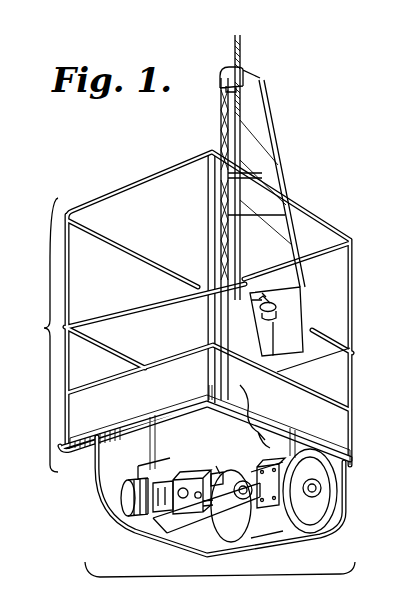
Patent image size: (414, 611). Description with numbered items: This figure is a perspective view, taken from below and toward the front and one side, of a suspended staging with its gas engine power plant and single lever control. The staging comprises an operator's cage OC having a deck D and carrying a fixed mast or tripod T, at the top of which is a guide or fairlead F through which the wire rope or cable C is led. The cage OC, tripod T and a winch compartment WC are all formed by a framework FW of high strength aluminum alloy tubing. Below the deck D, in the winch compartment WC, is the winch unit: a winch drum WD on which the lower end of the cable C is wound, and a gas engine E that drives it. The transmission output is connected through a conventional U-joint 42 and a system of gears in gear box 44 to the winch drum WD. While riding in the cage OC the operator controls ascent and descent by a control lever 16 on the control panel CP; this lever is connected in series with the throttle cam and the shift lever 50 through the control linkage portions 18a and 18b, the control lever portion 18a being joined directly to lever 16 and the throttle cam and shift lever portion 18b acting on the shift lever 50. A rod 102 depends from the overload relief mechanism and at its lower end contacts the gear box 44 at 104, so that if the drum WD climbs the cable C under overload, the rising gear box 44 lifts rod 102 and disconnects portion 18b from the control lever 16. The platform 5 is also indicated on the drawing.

The wire rope or cable C is at (241, 43).
The guide or fairlead F is at (245, 70).
The fixed mast or tripod T is at (262, 130).
The framework FW is at (69, 283).
The operator's cage OC is at (39, 335).
The control lever 16 is at (270, 302).
The control panel CP is at (303, 297).
The control lever portion 18a is at (304, 352).
The throttle cam and shift lever portion 18b is at (208, 402).
The platform 5 is at (88, 393).
The shift lever 50 is at (175, 463).
The rod 102 is at (203, 468).
The gear box 44 is at (273, 464).
The deck D is at (97, 463).
The gas engine E is at (124, 500).
The U-joint 42 is at (155, 530).
The brake 104 is at (200, 536).
The winch drum WD is at (238, 532).
The winch compartment WC is at (220, 579).